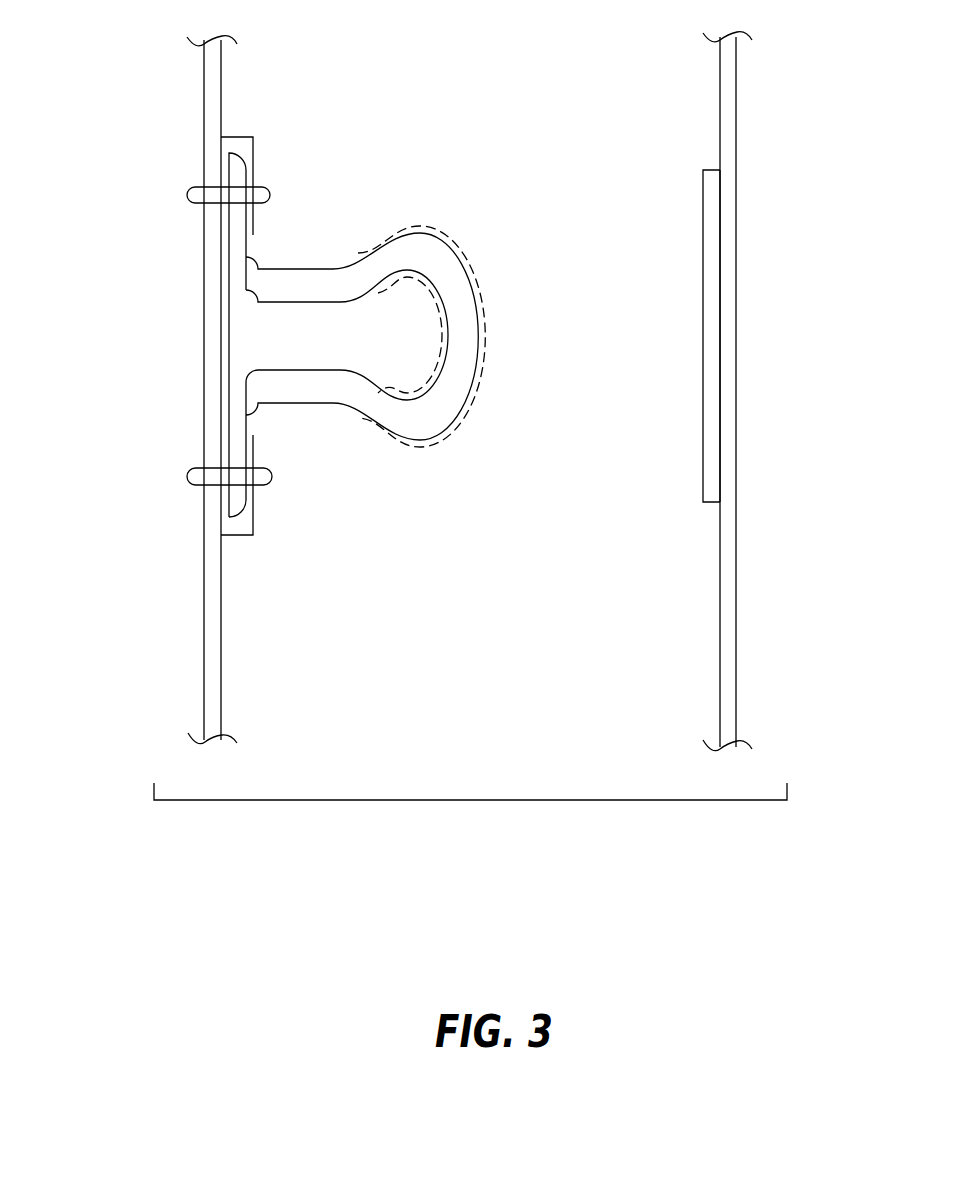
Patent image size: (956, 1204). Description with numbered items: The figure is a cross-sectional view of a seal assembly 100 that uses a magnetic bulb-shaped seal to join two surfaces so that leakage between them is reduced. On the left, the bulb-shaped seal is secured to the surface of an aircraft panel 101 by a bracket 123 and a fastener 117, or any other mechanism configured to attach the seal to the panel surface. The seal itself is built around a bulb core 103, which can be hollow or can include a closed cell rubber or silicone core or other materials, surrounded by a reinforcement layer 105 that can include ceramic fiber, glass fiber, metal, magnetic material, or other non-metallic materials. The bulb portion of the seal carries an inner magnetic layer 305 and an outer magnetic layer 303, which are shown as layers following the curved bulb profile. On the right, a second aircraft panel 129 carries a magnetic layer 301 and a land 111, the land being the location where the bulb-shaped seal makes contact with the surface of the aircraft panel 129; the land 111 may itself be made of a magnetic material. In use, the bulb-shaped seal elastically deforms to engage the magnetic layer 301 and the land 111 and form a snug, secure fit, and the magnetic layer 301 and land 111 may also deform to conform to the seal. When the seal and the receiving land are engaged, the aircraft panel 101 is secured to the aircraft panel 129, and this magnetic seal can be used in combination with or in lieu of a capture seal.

The seal assembly 100 is at (503, 843).
The aircraft panel 101 is at (217, 612).
The bulb core 103 is at (257, 333).
The reinforcement layer 105 is at (305, 280).
The land 111 is at (718, 365).
The fastener 117 is at (187, 195).
The bracket 123 is at (238, 135).
The aircraft panel 129 is at (727, 683).
The magnetic layer 301 is at (712, 273).
The outer magnetic layer 303 is at (435, 440).
The inner magnetic layer 305 is at (442, 360).